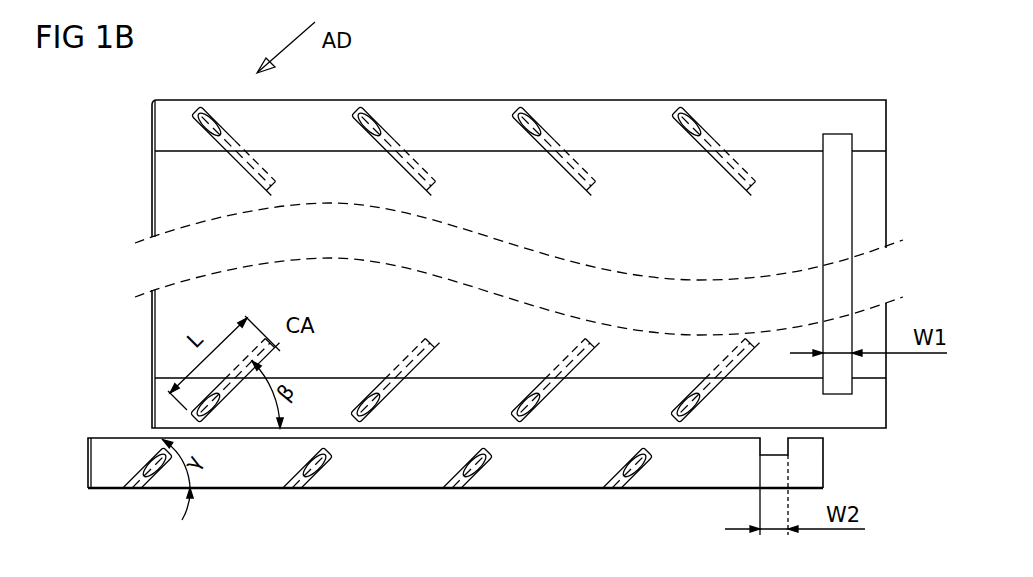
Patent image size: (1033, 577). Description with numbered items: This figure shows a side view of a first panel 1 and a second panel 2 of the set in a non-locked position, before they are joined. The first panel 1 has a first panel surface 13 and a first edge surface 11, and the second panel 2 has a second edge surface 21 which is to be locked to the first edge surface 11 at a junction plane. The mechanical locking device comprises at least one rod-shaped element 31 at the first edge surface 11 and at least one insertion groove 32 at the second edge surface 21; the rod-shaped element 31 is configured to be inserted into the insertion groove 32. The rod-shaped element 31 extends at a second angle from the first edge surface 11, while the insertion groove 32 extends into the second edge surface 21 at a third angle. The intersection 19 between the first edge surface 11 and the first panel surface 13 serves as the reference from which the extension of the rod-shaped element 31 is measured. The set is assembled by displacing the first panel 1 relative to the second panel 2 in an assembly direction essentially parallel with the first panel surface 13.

The first panel 1 is at (150, 348).
The second panel 2 is at (86, 462).
The first edge surface 11 is at (600, 408).
The first panel surface 13 is at (177, 193).
The intersection 19 is at (505, 343).
The second edge surface 21 is at (516, 460).
The rod-shaped element 31 is at (191, 420).
The insertion groove 32 is at (145, 457).